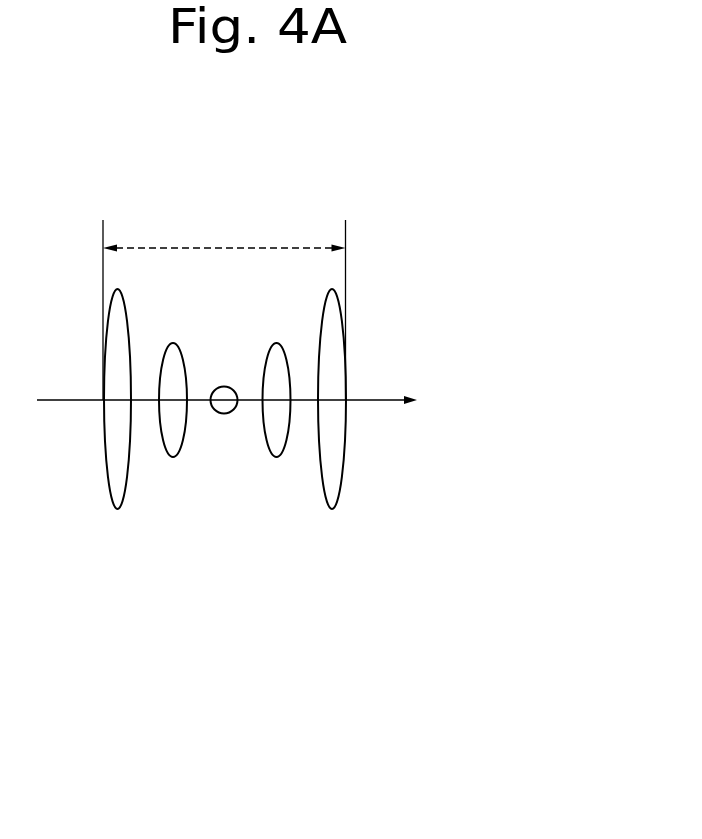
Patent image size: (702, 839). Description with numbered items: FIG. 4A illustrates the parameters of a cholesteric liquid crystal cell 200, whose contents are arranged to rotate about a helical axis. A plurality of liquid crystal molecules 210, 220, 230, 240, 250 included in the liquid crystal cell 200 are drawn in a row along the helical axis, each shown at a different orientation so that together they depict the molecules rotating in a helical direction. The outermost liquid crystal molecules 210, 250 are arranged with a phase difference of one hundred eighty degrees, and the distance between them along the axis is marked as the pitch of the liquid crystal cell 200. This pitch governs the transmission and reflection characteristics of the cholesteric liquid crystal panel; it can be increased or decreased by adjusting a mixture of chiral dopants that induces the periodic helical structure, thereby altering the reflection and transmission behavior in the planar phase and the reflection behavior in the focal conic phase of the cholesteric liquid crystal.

The liquid crystal cell 200 is at (433, 161).
The liquid crystal molecule 210 is at (118, 509).
The liquid crystal molecule 220 is at (173, 457).
The liquid crystal molecule 230 is at (224, 413).
The liquid crystal molecule 240 is at (276, 457).
The liquid crystal molecule 250 is at (332, 509).